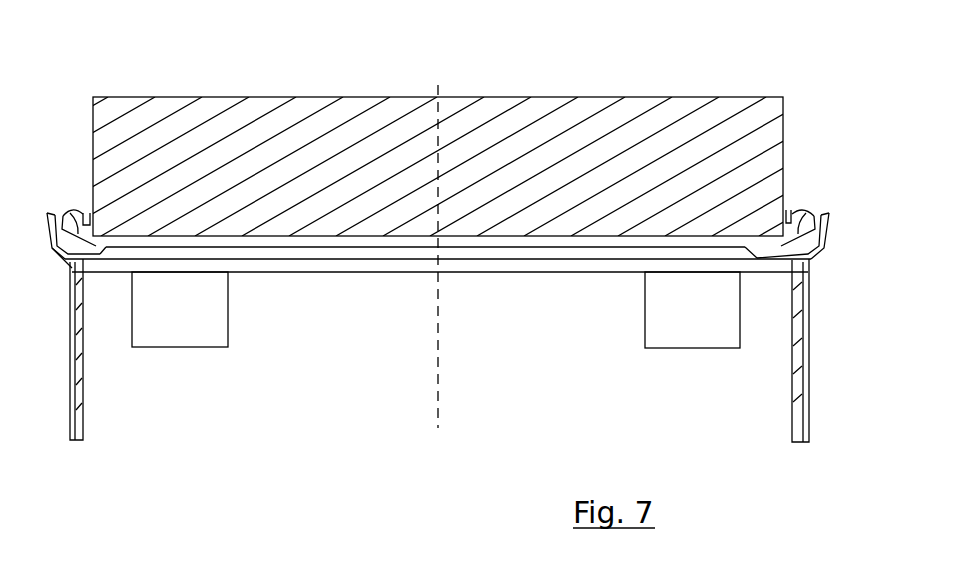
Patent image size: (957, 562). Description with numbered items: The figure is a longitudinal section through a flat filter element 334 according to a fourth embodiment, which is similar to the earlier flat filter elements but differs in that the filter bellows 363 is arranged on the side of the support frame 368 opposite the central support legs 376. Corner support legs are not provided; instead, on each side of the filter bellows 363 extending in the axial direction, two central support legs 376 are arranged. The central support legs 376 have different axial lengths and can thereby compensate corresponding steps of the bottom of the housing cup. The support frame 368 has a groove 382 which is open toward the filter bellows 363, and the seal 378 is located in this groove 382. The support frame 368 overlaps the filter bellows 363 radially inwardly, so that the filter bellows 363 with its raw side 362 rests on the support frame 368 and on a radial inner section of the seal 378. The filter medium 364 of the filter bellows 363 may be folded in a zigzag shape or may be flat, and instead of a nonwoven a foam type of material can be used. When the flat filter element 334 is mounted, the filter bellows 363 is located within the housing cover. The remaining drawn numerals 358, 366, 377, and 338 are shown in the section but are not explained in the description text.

The flat filter element 334 is at (77, 72).
The display panel 358 is at (478, 124).
The filter bellows 363 is at (245, 130).
The filter medium 364 is at (600, 135).
The raw side 362 is at (513, 241).
The support frame 368 is at (284, 256).
The frame 366 is at (817, 277).
The right retaining clip 377 is at (768, 215).
The seal 378 is at (70, 213).
The groove 382 is at (83, 268).
The central support legs 376 is at (212, 327).
The centerline 338 is at (436, 400).